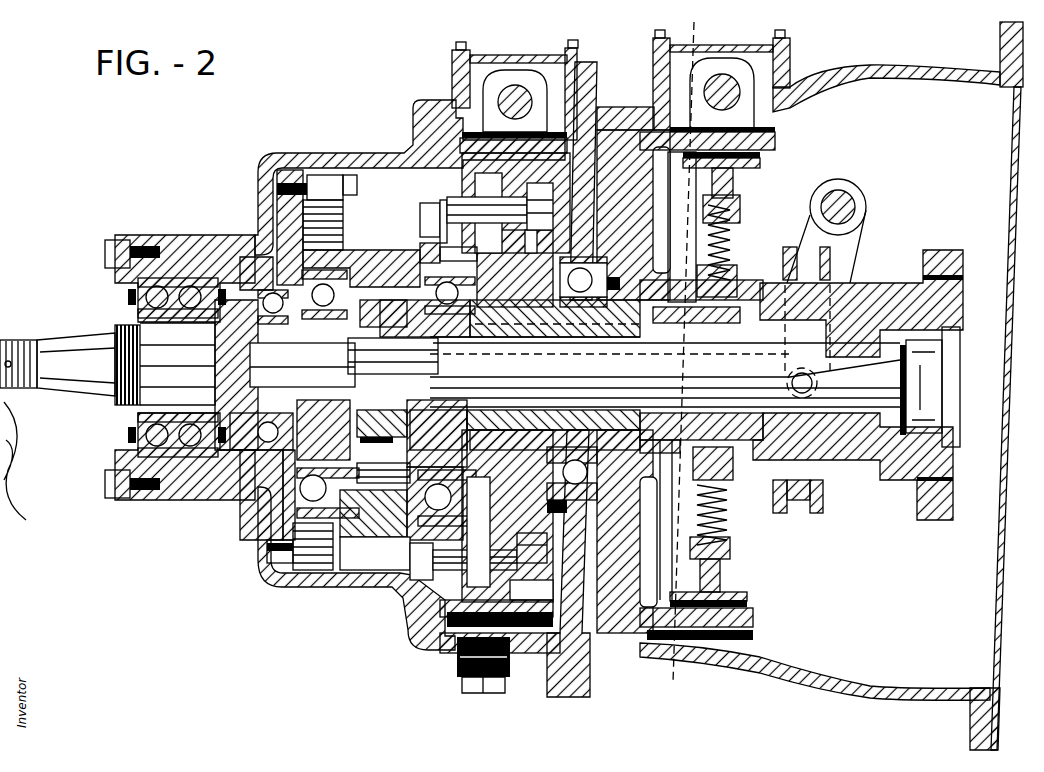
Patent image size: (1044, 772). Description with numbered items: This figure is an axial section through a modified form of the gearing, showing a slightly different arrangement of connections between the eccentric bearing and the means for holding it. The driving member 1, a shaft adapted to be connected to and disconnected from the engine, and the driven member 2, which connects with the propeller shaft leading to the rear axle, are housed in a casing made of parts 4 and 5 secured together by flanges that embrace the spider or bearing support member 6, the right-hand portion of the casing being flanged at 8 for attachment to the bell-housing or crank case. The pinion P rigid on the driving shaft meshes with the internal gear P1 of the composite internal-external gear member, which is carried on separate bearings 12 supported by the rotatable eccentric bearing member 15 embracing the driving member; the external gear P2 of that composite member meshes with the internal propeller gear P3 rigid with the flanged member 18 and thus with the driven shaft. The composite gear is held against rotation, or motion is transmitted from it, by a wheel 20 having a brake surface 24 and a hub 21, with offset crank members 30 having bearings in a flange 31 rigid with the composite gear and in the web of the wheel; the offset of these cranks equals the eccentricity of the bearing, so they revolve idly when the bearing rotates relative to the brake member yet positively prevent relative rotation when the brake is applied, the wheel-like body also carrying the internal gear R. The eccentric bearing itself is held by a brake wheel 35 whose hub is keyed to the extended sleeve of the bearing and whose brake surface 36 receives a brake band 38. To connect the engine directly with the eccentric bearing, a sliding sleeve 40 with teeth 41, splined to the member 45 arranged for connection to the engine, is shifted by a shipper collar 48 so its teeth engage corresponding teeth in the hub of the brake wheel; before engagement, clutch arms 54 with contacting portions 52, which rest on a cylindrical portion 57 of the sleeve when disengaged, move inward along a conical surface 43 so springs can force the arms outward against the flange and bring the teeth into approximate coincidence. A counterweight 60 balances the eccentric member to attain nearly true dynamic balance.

The driving member 1 is at (695, 387).
The driven member 2 is at (141, 398).
The casing part 4 is at (694, 22).
The casing part 5 is at (418, 640).
The spider or bearing support member 6 is at (578, 618).
The flange 8 is at (978, 723).
The bearings 12 is at (386, 497).
The eccentric bearing member 15 is at (455, 410).
The flanged member 18 is at (258, 520).
The brake wheel 20 is at (520, 246).
The hub 21 is at (476, 458).
The brake surface 24 is at (450, 600).
The offset crank members 30 is at (481, 380).
The flange 31 is at (458, 200).
The brake wheel 35 is at (612, 575).
The brake surface 36 is at (778, 147).
The brake band 38 is at (770, 130).
The sliding sleeve 40 is at (725, 425).
The teeth 41 is at (664, 520).
The conical surface 43 is at (683, 227).
The member 45 is at (883, 462).
The shipper collar 48 is at (812, 513).
The contacting portions 52 is at (735, 292).
The clutch arms 54 is at (770, 165).
The cylindrical portion 57 is at (696, 543).
The counterweight 60 is at (620, 140).
The pinion P is at (398, 328).
The internal gear P1 is at (387, 490).
The external gear P2 is at (350, 537).
The propeller gear P3 is at (345, 210).
The internal gear R is at (507, 590).